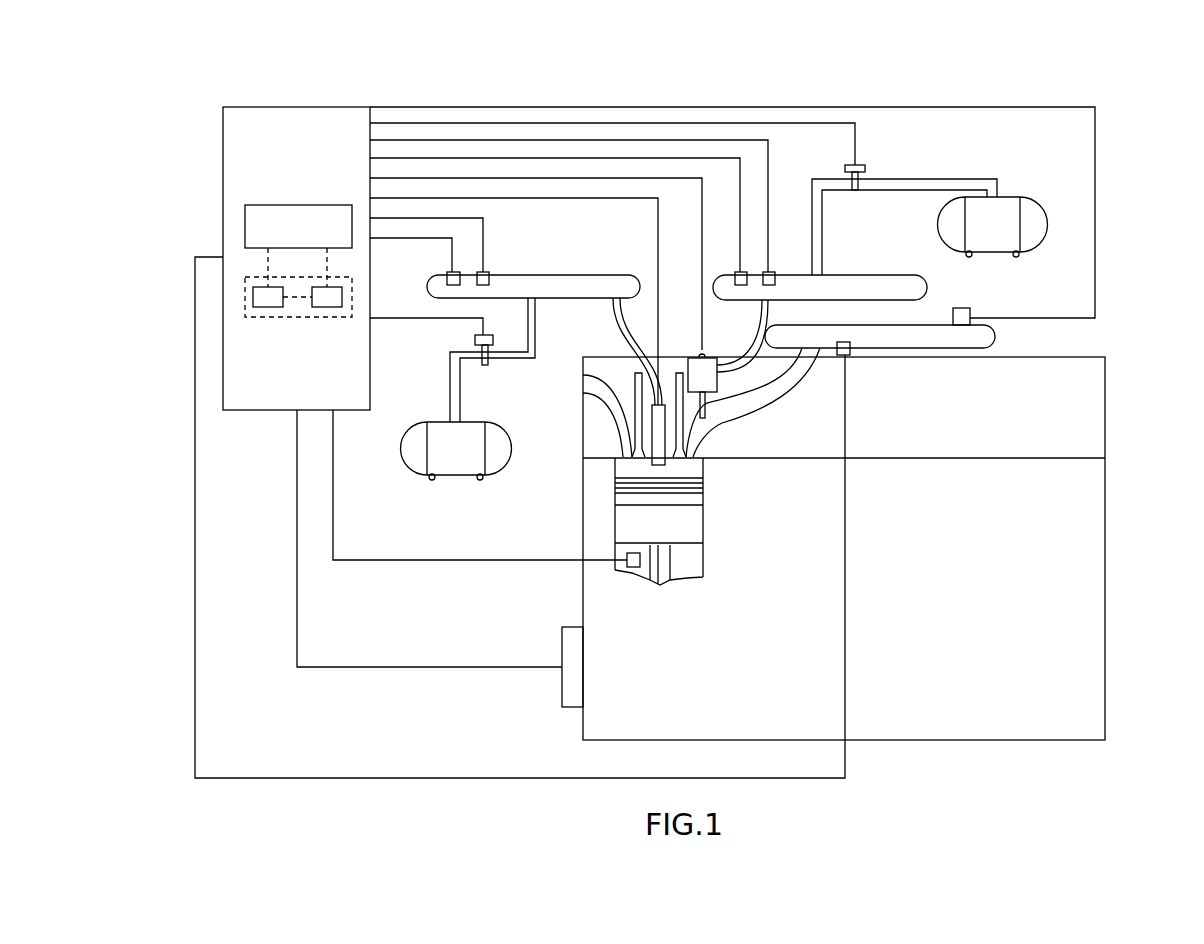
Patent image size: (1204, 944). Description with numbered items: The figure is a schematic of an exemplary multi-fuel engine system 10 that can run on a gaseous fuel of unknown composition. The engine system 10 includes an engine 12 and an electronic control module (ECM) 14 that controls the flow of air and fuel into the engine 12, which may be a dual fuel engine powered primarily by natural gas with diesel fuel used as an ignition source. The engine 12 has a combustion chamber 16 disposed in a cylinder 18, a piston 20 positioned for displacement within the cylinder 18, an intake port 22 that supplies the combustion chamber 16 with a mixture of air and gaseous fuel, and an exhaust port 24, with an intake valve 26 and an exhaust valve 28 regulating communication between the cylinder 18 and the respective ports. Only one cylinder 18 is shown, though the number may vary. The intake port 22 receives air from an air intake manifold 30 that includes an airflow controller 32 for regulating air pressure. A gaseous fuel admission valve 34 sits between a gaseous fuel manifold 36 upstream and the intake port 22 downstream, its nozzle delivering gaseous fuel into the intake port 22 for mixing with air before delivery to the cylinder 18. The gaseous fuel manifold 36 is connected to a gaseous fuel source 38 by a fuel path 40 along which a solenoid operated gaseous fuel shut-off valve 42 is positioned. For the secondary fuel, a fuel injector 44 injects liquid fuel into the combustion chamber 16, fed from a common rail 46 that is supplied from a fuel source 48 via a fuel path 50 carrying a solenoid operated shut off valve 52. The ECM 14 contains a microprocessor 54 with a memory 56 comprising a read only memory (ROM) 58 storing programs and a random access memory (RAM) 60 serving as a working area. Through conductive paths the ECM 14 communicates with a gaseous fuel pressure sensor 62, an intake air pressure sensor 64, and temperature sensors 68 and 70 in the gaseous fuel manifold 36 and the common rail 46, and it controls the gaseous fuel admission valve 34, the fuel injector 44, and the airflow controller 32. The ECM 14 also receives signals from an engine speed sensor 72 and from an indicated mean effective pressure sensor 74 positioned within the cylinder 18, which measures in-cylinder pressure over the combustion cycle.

The engine system 10 is at (790, 80).
The engine 12 is at (1105, 578).
The electronic control module (ECM) 14 is at (305, 107).
The combustion chamber 16 is at (695, 467).
The cylinder 18 is at (703, 557).
The piston 20 is at (700, 496).
The intake port 22 is at (760, 403).
The exhaust port 24 is at (600, 406).
The intake valve 26 is at (692, 437).
The exhaust valve 28 is at (638, 437).
The air intake manifold 30 is at (995, 343).
The airflow controller 32 is at (962, 308).
The gaseous fuel admission valve 34 is at (706, 368).
The gaseous fuel manifold 36 is at (870, 285).
The gaseous fuel source 38 is at (1012, 197).
The fuel path 40 is at (930, 180).
The gaseous fuel shut-off valve 42 is at (862, 166).
The fuel injector 44 is at (665, 400).
The common rail 46 is at (570, 278).
The fuel source 48 is at (414, 455).
The fuel path 50 is at (460, 392).
The shut off valve 52 is at (486, 338).
The microprocessor 54 is at (298, 261).
The memory 56 is at (245, 297).
The read only memory (ROM) 58 is at (268, 297).
The random access memory (RAM) 60 is at (448, 274).
The gaseous fuel pressure sensor 62 is at (740, 270).
The intake air pressure sensor 64 is at (848, 356).
The temperature sensor 68 is at (770, 270).
The temperature sensor 70 is at (490, 274).
The engine speed sensor 72 is at (562, 645).
The indicated mean effective pressure sensor (IMEP) 74 is at (633, 570).